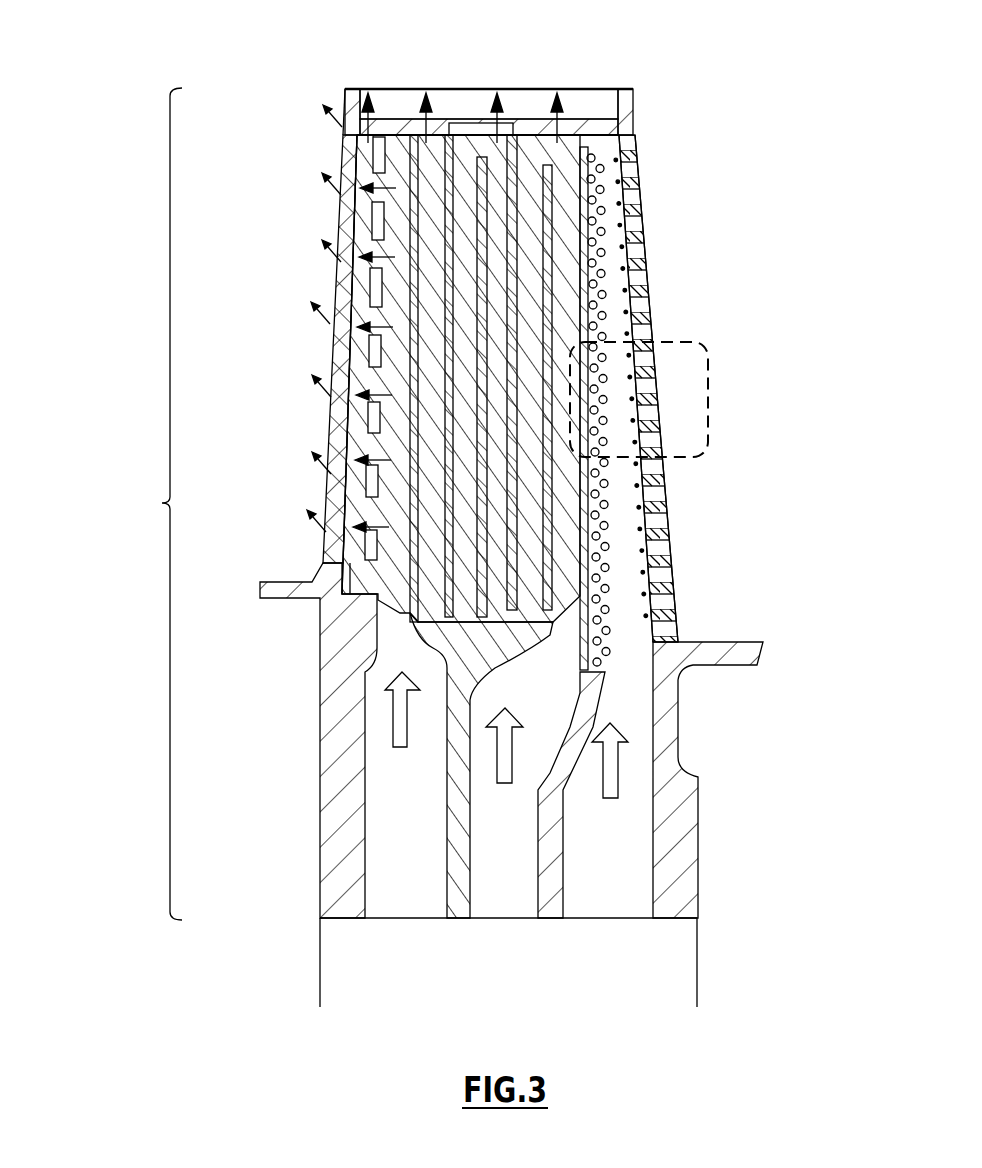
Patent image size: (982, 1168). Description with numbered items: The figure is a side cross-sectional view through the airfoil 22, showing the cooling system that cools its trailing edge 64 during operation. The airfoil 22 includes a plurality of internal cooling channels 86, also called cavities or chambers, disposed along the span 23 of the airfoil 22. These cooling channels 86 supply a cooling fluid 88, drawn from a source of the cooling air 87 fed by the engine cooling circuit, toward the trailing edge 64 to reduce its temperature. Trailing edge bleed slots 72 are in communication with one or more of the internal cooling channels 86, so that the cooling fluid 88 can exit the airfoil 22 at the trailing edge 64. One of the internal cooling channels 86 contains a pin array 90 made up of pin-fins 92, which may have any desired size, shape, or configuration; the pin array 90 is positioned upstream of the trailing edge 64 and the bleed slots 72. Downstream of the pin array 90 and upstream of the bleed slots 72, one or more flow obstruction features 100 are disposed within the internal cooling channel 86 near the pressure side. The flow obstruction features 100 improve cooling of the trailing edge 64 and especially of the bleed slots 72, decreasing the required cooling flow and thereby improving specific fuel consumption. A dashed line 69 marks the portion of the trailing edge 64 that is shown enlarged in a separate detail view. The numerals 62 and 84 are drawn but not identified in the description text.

The airfoil 22 is at (123, 69).
The span 23 is at (154, 504).
The pressure side wall 62 is at (335, 298).
The trailing edge 64 is at (680, 530).
The dashed line 69 is at (713, 362).
The trailing edge bleed slots 72 is at (647, 317).
The cooling holes 84 is at (330, 247).
The internal cooling channel 86 is at (389, 890).
The source of the cooling air 87 is at (494, 1031).
The cooling fluid 88 is at (403, 748).
The pin array 90 is at (606, 248).
The pin-fins 92 is at (605, 493).
The flow obstruction features 100 is at (637, 430).